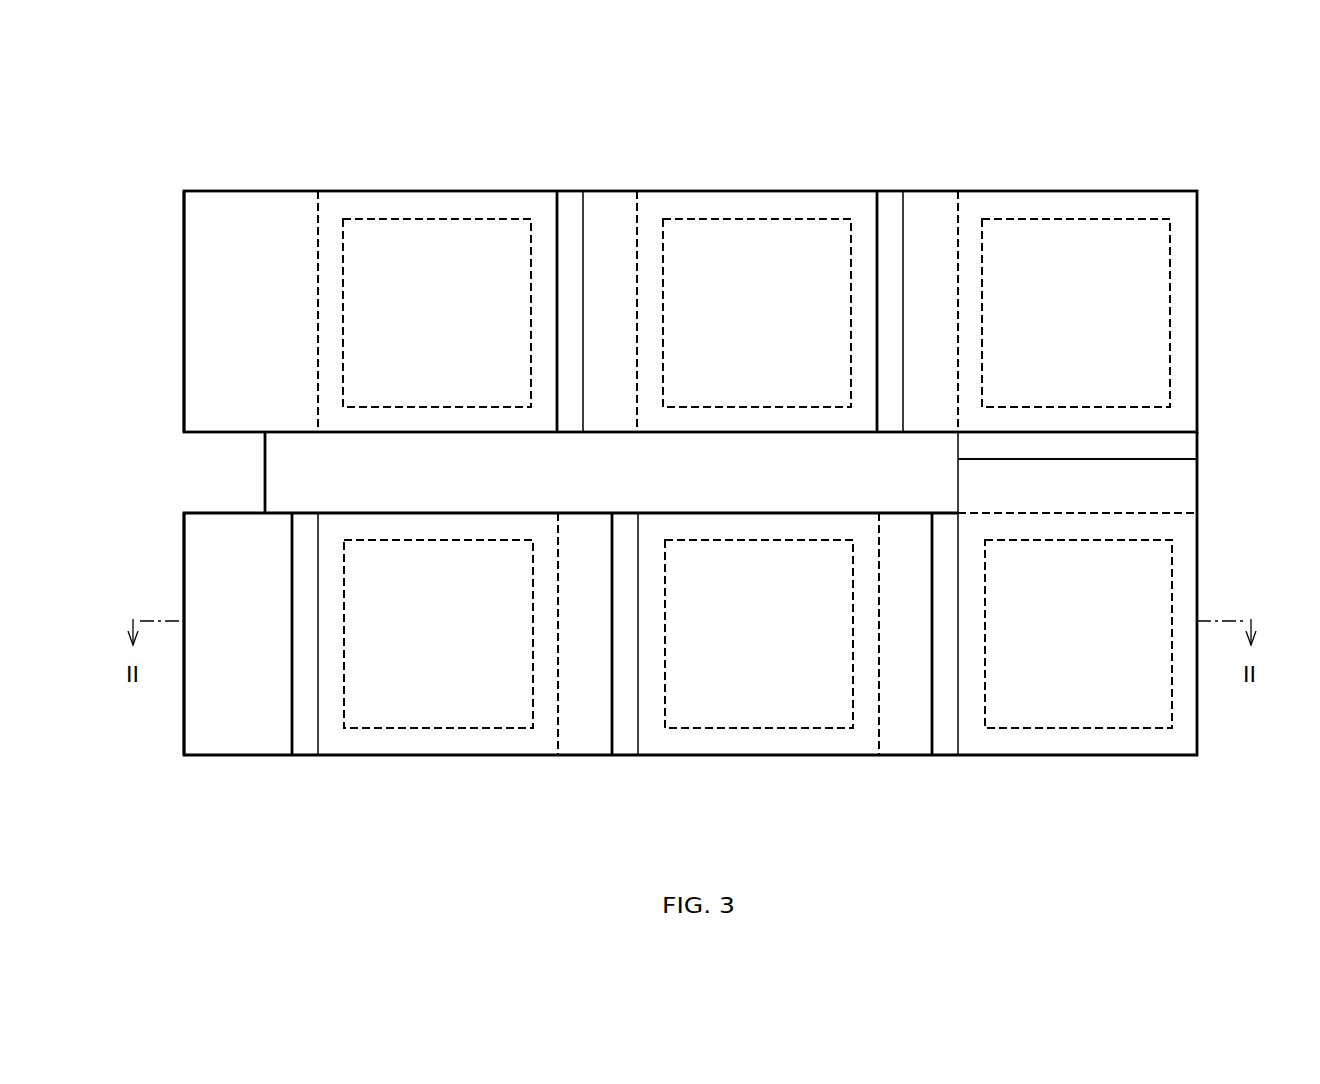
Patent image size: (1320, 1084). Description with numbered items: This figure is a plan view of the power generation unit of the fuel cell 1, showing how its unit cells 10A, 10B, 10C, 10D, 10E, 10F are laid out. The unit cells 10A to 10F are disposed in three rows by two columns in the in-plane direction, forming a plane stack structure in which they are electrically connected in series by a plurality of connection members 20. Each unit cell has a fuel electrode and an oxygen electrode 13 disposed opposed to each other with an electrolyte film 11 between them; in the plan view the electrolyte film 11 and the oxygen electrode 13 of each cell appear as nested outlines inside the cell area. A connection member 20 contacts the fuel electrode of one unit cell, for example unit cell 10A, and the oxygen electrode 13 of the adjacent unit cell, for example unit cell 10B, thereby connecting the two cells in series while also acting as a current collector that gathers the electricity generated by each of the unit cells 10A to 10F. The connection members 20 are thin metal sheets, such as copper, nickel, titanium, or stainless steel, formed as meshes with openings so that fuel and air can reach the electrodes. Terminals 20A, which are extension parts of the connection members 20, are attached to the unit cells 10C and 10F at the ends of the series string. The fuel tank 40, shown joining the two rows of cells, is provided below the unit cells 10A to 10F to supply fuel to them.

The fuel cell 1 is at (1206, 120).
The unit cell 10A is at (386, 786).
The unit cell 10B is at (706, 786).
The unit cell 10C is at (1053, 786).
The unit cell 10D is at (1050, 161).
The unit cell 10E is at (730, 161).
The unit cell 10F is at (410, 161).
The electrolyte film 11 is at (498, 203).
The oxygen electrode 13 is at (447, 242).
The connection member 20 is at (367, 187).
The terminal 20A is at (249, 203).
The fuel tank 40 is at (266, 476).